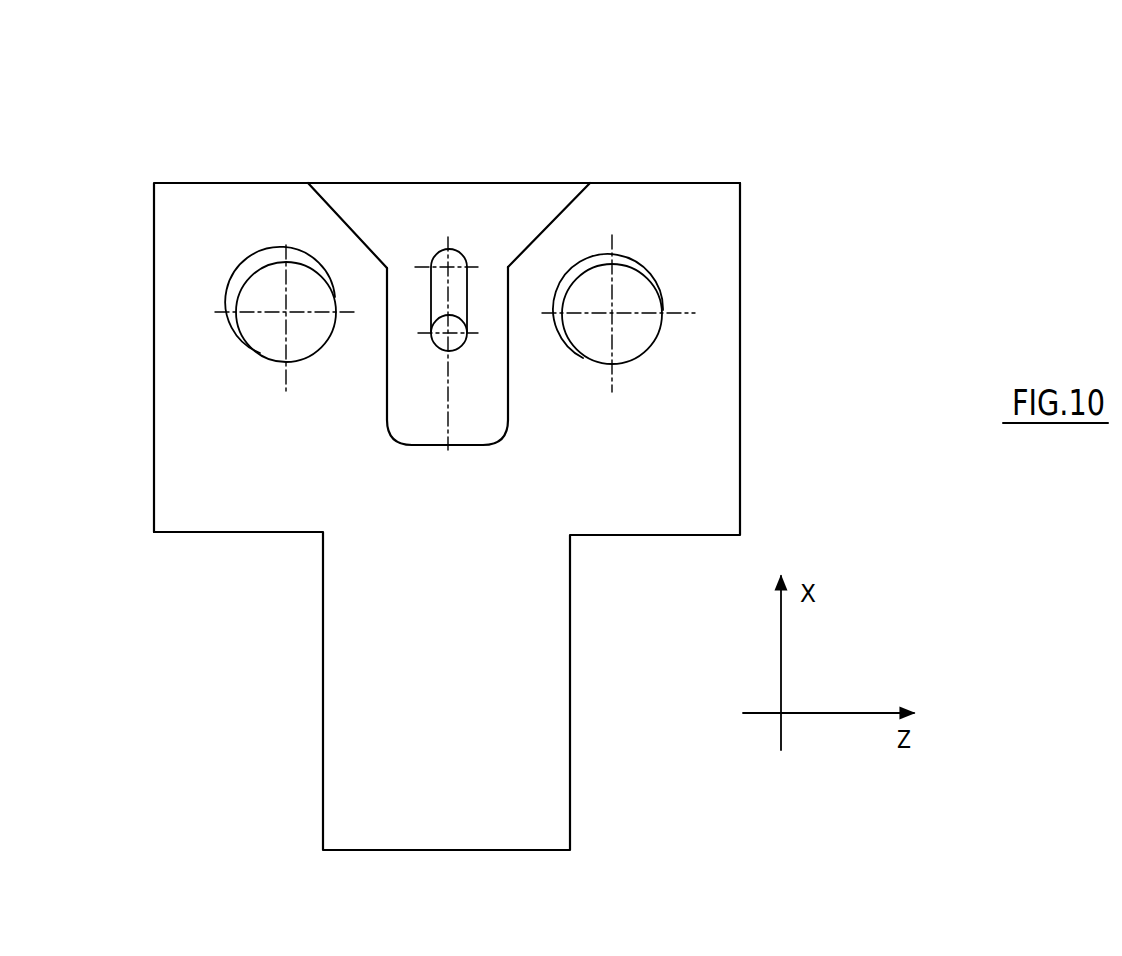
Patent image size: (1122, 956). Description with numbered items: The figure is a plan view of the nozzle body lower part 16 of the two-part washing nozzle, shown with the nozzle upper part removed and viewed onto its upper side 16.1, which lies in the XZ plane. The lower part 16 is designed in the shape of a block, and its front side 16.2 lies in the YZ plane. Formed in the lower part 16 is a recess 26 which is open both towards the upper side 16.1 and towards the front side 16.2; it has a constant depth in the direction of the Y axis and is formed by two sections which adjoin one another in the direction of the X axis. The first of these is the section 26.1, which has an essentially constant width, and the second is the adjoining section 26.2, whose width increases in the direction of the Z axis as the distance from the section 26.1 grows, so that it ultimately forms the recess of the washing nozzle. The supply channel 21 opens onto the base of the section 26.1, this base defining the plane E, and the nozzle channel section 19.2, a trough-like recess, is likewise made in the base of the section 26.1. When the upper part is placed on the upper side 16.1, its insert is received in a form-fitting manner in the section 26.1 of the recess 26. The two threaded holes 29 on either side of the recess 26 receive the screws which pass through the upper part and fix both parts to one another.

The nozzle body lower part 16 is at (486, 451).
The upper side 16.1 is at (722, 503).
The front side 16.2 is at (250, 183).
The nozzle channel section 19.2 is at (430, 308).
The supply channel 21 is at (460, 343).
The recess 26 is at (449, 250).
The section with essentially constant width 26.1 is at (495, 418).
The section with increasing width 26.2 is at (491, 220).
The threaded holes 29 is at (252, 330).